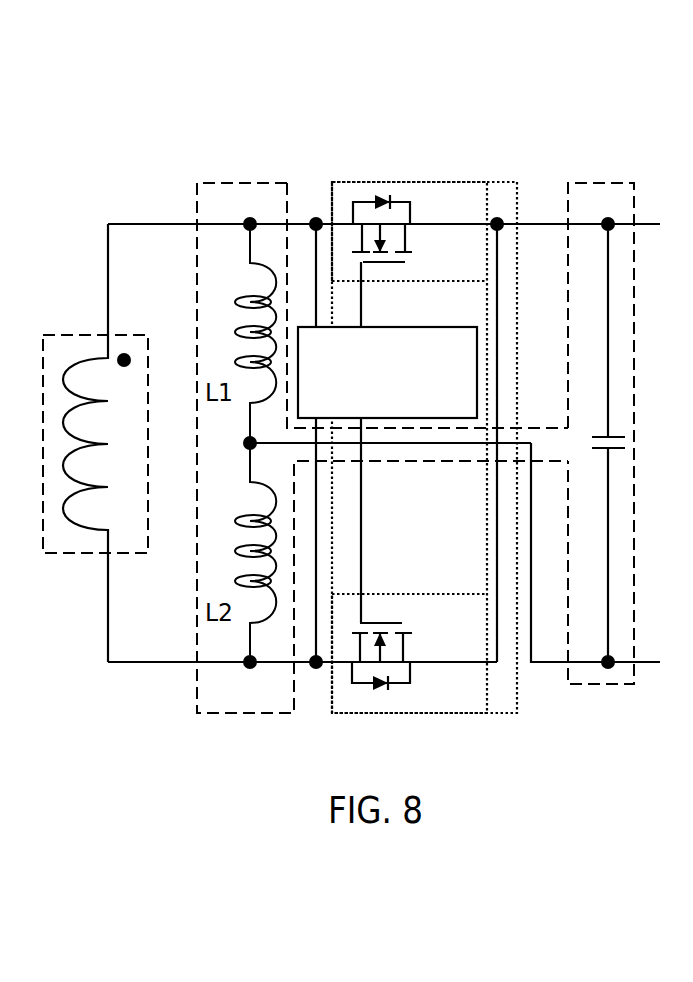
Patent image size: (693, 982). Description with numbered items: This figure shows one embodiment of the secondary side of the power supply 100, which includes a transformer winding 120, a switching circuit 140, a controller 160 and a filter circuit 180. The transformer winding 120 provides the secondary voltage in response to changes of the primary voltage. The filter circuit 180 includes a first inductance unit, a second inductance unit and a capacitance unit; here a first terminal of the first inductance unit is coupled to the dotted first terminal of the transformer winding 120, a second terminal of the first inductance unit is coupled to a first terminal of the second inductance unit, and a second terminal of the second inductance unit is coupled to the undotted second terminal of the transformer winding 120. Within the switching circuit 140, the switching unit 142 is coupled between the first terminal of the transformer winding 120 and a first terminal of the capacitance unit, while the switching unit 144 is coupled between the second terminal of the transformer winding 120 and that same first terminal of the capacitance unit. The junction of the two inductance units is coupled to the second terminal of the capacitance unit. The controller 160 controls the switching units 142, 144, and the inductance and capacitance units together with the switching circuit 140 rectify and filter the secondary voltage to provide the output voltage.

The power supply 100 is at (70, 70).
The transformer winding 120 is at (90, 336).
The switching circuit 140 is at (463, 182).
The switching unit 142 is at (408, 254).
The switching unit 144 is at (410, 637).
The controller 160 is at (458, 386).
The filter circuit 180 is at (615, 182).